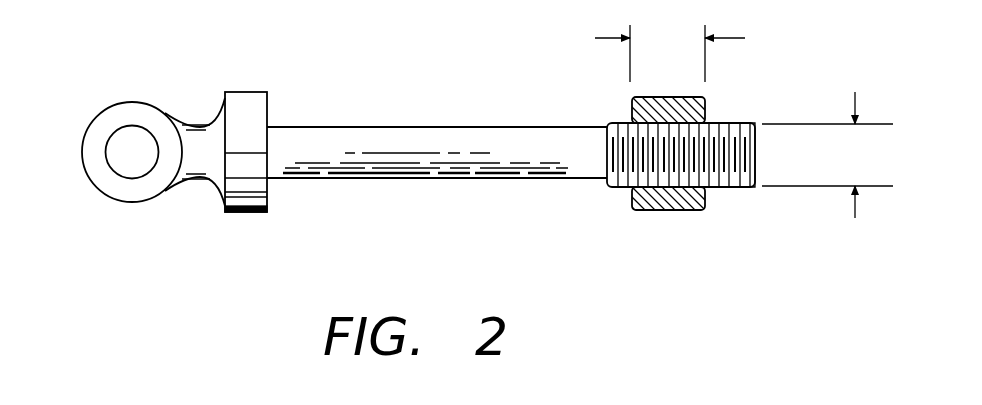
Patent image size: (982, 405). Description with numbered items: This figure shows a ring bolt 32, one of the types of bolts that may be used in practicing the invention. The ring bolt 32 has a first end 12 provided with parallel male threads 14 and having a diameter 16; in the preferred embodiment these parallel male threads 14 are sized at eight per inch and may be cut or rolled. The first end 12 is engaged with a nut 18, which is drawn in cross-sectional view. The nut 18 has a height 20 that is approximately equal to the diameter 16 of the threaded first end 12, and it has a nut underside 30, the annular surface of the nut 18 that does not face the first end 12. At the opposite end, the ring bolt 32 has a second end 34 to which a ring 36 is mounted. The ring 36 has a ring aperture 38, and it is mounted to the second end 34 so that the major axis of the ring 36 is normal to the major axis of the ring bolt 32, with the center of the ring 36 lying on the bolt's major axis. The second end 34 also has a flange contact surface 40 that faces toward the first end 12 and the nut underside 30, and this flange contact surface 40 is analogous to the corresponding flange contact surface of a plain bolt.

The first end 12 is at (756, 165).
The parallel male threads 14 is at (734, 123).
The diameter 16 is at (827, 155).
The nut 18 is at (631, 110).
The height 20 is at (670, 53).
The nut underside 30 is at (632, 190).
The ring bolt 32 is at (425, 122).
The second end 34 is at (210, 122).
The ring 36 is at (110, 108).
The ring aperture 38 is at (108, 167).
The flange contact surface 40 is at (267, 112).